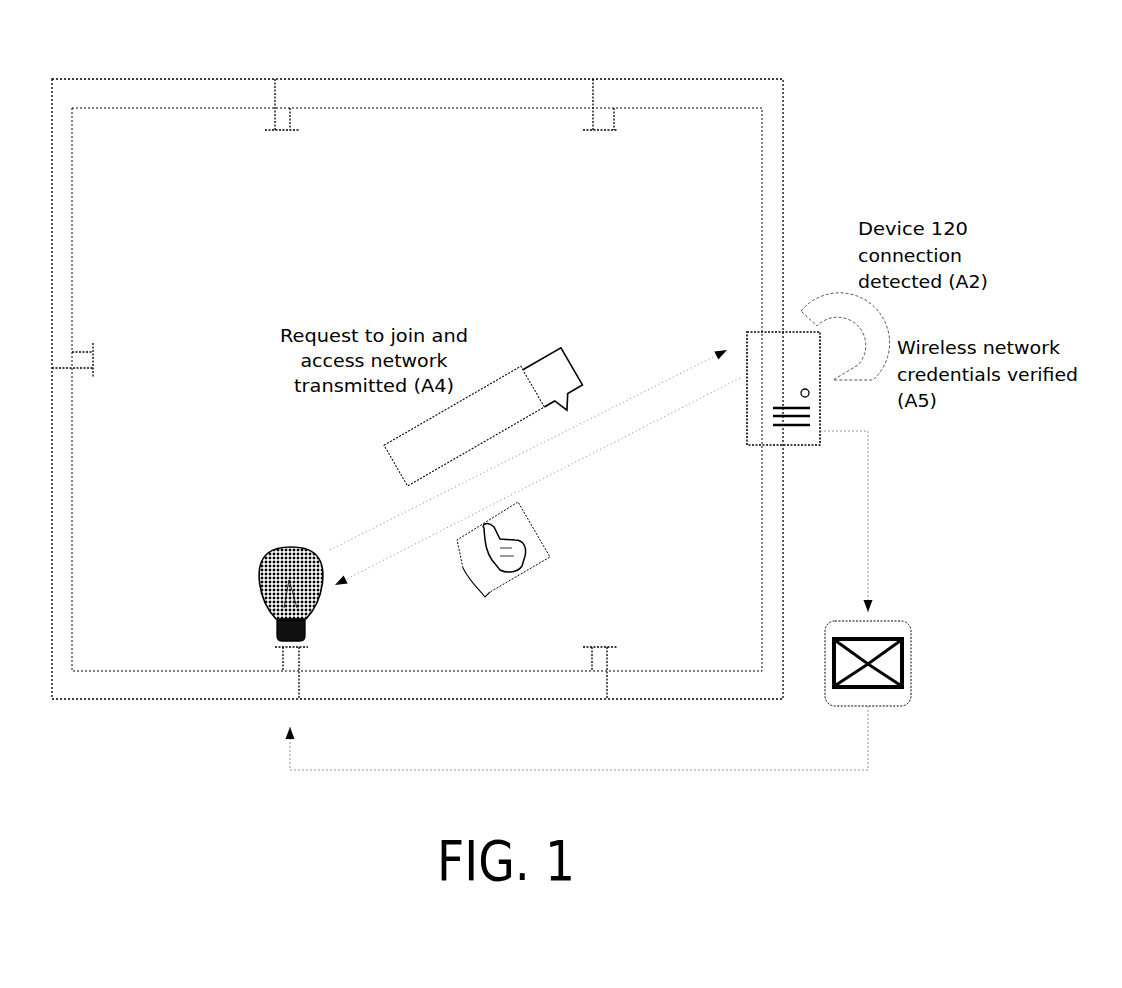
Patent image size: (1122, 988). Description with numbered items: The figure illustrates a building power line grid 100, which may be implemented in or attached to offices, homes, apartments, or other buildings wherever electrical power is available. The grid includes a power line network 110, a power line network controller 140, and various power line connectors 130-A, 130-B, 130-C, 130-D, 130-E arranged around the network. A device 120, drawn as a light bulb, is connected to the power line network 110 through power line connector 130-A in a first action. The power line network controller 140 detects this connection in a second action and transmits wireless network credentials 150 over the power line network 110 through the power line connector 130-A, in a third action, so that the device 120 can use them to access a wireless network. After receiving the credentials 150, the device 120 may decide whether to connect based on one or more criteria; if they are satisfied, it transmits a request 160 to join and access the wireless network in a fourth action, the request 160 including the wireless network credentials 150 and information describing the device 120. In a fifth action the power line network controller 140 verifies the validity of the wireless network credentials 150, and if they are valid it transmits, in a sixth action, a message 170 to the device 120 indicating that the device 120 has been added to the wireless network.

The building power line grid 100 is at (862, 128).
The power line network 110 is at (783, 128).
The device 120 is at (288, 548).
The power line connector 130-A is at (309, 648).
The power line connector 130-B is at (607, 647).
The power line connector 130-C is at (614, 130).
The power line connector 130-D is at (290, 130).
The power line connector 130-E is at (93, 362).
The power line network controller 140 is at (747, 332).
The wireless network credentials 150 is at (895, 620).
The request 160 is at (562, 348).
The message 170 is at (485, 597).